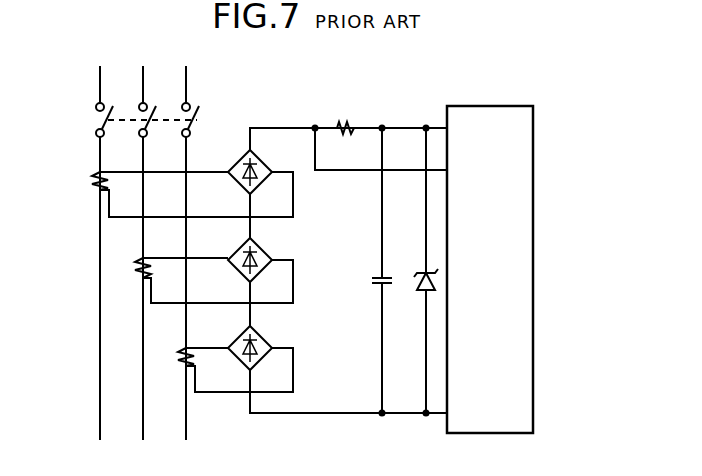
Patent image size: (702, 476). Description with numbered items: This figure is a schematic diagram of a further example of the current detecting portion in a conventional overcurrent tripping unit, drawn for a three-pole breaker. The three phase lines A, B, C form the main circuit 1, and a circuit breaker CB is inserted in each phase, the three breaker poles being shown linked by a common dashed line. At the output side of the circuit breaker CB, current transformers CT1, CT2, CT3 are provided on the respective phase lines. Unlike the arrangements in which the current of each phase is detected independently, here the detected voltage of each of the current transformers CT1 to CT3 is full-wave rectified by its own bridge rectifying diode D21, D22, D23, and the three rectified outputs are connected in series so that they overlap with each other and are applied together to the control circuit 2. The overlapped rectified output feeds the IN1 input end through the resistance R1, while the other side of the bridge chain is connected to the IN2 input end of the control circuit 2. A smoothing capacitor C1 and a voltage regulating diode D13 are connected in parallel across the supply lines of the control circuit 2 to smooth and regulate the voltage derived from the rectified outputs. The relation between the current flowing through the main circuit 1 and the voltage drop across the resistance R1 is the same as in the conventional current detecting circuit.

The main circuit 1 is at (139, 38).
The control circuit 2 is at (533, 177).
The phase A line A is at (100, 55).
The phase B line B is at (143, 55).
The phase C line C is at (186, 55).
The circuit breaker CB is at (197, 119).
The current transformer CT1 is at (93, 188).
The current transformer CT2 is at (138, 280).
The current transformer CT3 is at (184, 366).
The bridge rectifying diode D21 is at (262, 157).
The bridge rectifying diode D22 is at (262, 244).
The bridge rectifying diode D23 is at (262, 332).
The resistance R1 is at (348, 122).
The smoothing capacitor C1 is at (380, 286).
The voltage regulating diode D13 is at (420, 292).
The IN1 input end IN1 is at (462, 131).
The IN2 input end IN2 is at (462, 178).